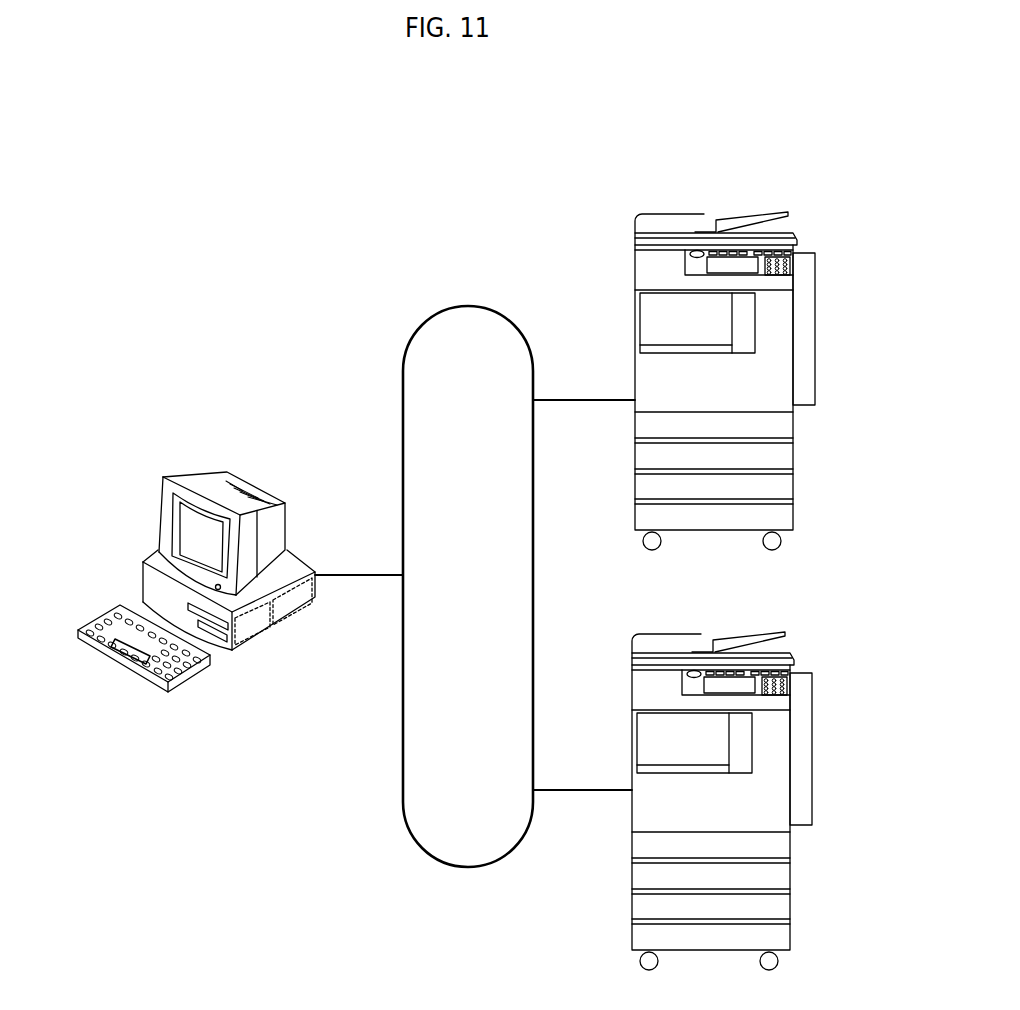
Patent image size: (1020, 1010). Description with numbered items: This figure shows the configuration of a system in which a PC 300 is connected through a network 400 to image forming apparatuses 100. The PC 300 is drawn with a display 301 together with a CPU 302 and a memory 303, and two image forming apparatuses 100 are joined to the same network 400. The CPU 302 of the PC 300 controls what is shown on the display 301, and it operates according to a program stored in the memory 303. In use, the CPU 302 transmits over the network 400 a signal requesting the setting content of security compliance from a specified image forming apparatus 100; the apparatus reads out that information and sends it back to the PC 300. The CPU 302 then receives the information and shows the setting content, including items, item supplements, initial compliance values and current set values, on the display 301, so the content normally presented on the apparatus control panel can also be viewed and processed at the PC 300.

The image forming apparatus 100 is at (764, 203).
The PC 300 is at (194, 550).
The display 301 is at (187, 533).
The CPU 302 is at (252, 632).
The memory 303 is at (295, 608).
The network 400 is at (445, 868).